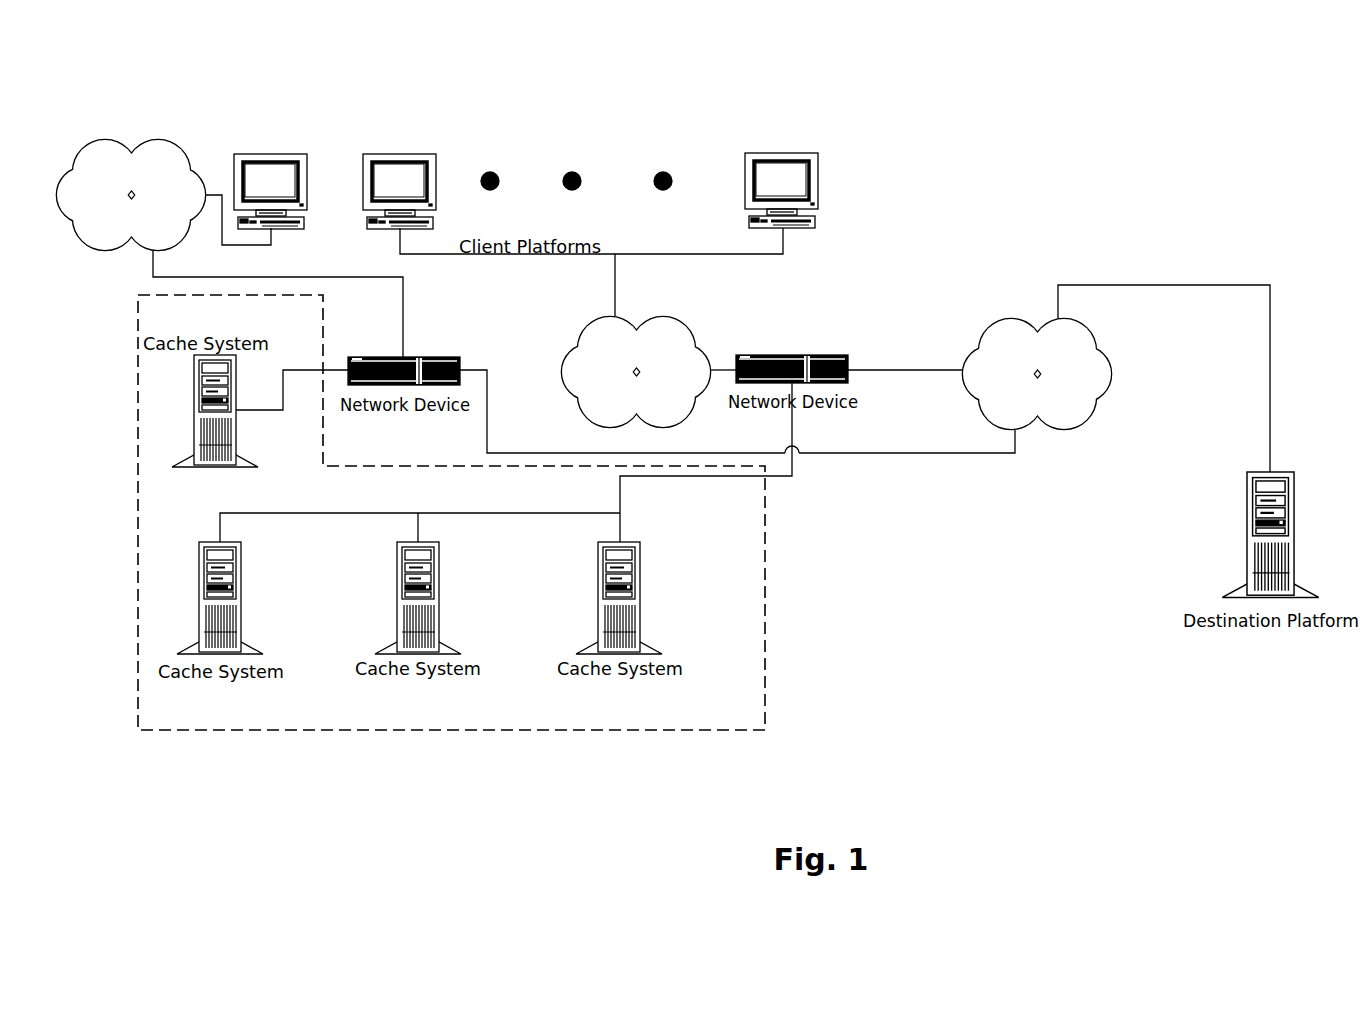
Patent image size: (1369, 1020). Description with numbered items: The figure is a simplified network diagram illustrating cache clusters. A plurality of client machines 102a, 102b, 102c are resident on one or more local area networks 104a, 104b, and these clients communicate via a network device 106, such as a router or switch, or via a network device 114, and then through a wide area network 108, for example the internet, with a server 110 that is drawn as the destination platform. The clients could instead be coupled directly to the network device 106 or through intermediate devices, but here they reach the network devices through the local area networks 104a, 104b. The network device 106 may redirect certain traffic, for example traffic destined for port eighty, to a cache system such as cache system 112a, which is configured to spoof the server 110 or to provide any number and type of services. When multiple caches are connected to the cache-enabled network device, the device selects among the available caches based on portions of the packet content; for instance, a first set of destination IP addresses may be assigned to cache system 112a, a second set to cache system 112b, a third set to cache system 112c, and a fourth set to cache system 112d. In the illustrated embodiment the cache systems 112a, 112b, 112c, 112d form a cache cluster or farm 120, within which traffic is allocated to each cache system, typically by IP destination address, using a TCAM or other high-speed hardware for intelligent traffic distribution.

The client machine 102a is at (271, 153).
The client machine 102b is at (399, 153).
The client machine 102c is at (783, 153).
The local area network 104a is at (131, 140).
The local area network 104b is at (680, 325).
The network device 106 is at (792, 355).
The wide area network 108 is at (1014, 312).
The server 110 is at (1247, 532).
The cache system 112a is at (200, 598).
The cache system 112b is at (398, 598).
The cache system 112c is at (599, 598).
The cache system 112d is at (195, 409).
The network device 114 is at (406, 357).
The cache cluster 120 is at (766, 628).